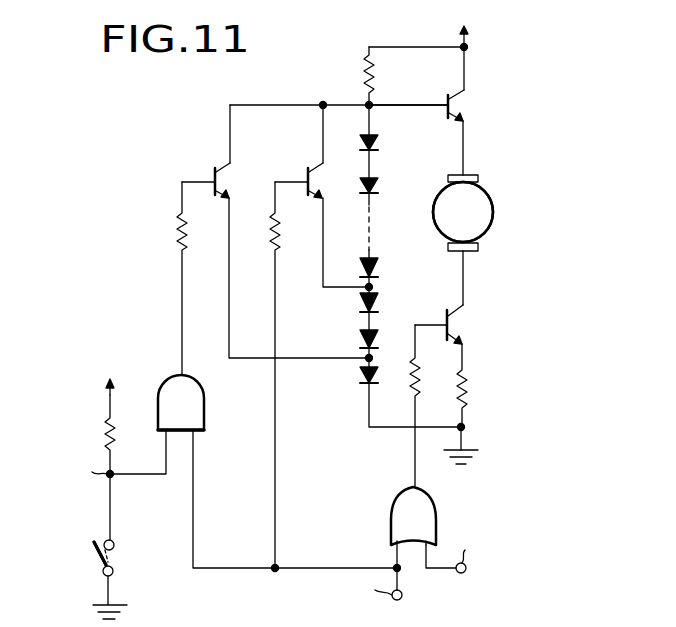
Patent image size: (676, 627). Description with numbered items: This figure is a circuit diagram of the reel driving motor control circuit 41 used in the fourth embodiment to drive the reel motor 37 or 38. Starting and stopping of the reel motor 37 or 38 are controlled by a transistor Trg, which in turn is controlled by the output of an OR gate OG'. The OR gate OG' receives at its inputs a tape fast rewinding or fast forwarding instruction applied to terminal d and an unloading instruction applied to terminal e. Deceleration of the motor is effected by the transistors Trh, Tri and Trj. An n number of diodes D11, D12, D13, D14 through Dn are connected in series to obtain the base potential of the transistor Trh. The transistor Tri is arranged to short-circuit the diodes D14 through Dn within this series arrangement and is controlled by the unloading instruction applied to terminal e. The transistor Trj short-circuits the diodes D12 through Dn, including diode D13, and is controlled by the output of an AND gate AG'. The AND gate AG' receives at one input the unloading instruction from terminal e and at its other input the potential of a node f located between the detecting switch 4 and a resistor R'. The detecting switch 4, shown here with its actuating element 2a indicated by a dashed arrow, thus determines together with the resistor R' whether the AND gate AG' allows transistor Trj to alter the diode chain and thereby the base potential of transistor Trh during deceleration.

The control circuit 41 is at (190, 93).
The reel motor 37 is at (490, 205).
The reel motor 38 is at (463, 212).
The switch actuator 2a is at (94, 557).
The detecting switch 4 is at (103, 569).
The transistor Trj is at (213, 170).
The transistor Tri is at (306, 170).
The transistor Trh is at (457, 107).
The transistor Trg is at (460, 327).
The diode Dn is at (378, 145).
The diode D14 is at (378, 264).
The diode D13 is at (378, 301).
The diode D12 is at (360, 341).
The diode D11 is at (360, 378).
The OR gate OG' is at (433, 527).
The AND gate AG' is at (201, 402).
The resistor R' is at (95, 434).